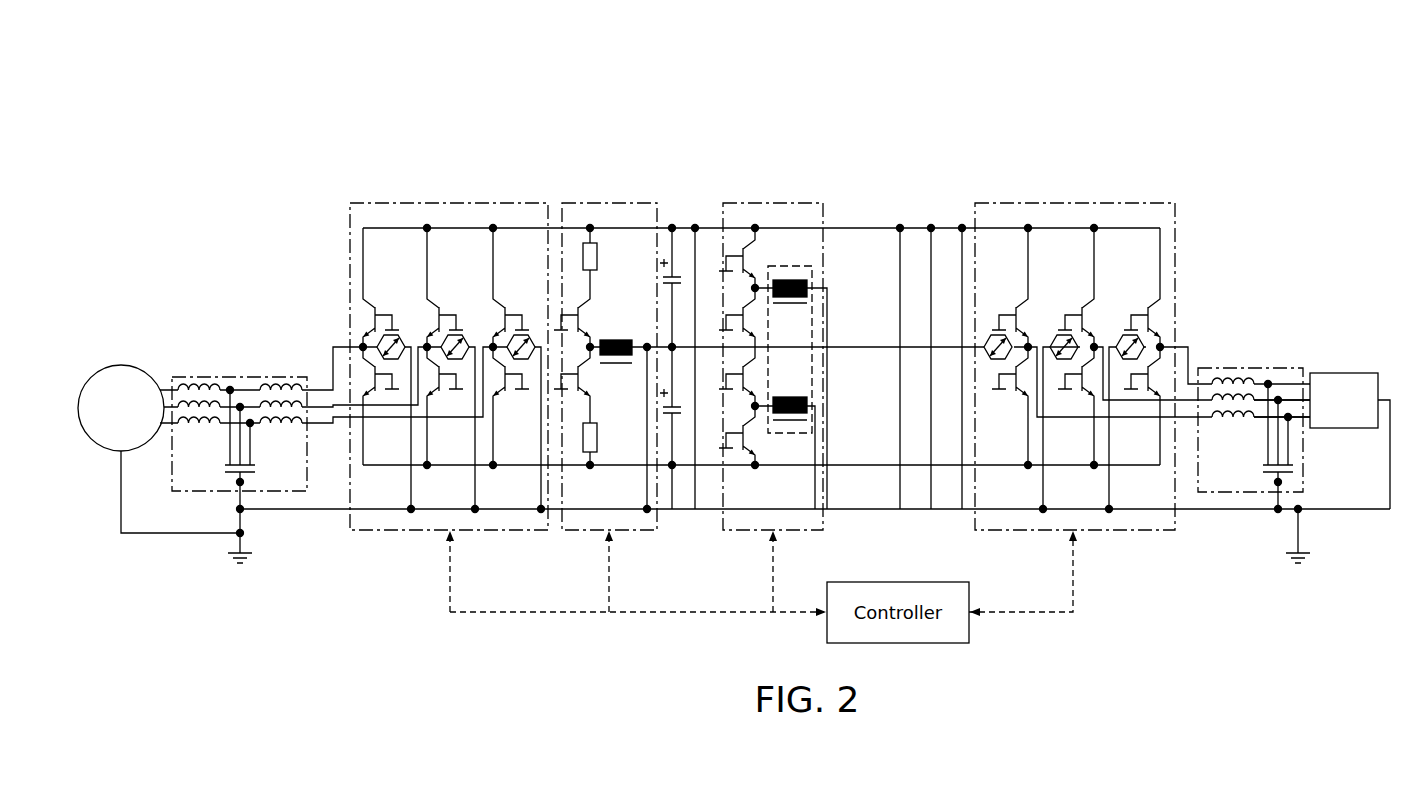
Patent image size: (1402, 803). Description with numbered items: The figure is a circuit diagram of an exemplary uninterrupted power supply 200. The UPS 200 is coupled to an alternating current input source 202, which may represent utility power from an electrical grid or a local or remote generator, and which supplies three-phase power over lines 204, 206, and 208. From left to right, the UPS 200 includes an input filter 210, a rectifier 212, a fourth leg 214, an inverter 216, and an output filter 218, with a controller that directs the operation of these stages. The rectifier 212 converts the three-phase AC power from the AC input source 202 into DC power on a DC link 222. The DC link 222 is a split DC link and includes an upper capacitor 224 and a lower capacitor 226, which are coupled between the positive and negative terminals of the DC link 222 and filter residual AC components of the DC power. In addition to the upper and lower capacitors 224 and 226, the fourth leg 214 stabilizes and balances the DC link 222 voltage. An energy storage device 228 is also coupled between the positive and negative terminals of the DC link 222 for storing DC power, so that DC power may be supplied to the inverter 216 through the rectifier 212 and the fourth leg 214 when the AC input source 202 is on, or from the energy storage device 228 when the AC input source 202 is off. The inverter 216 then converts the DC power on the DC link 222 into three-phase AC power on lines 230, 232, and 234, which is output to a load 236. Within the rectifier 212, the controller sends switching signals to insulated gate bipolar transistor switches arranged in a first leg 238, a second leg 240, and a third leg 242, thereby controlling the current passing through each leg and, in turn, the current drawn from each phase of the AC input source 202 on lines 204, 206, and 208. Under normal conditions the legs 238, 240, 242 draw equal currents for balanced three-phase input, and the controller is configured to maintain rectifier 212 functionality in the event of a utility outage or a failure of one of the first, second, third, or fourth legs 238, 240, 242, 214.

The uninterrupted power supply 200 is at (398, 92).
The AC input source 202 is at (120, 364).
The line 204 is at (320, 388).
The line 206 is at (330, 400).
The line 208 is at (327, 425).
The input filter 210 is at (218, 376).
The rectifier 212 is at (755, 332).
The fourth leg 214 is at (606, 202).
The inverter 216 is at (1070, 202).
The output filter 218 is at (1250, 495).
The DC link 222 is at (646, 332).
The upper capacitor 224 is at (657, 290).
The lower capacitor 226 is at (657, 421).
The energy storage device 228 is at (766, 202).
The line 230 is at (1270, 380).
The line 232 is at (1290, 398).
The line 234 is at (1305, 420).
The load 236 is at (1333, 372).
The first leg 238 is at (388, 302).
The second leg 240 is at (451, 302).
The third leg 242 is at (516, 302).